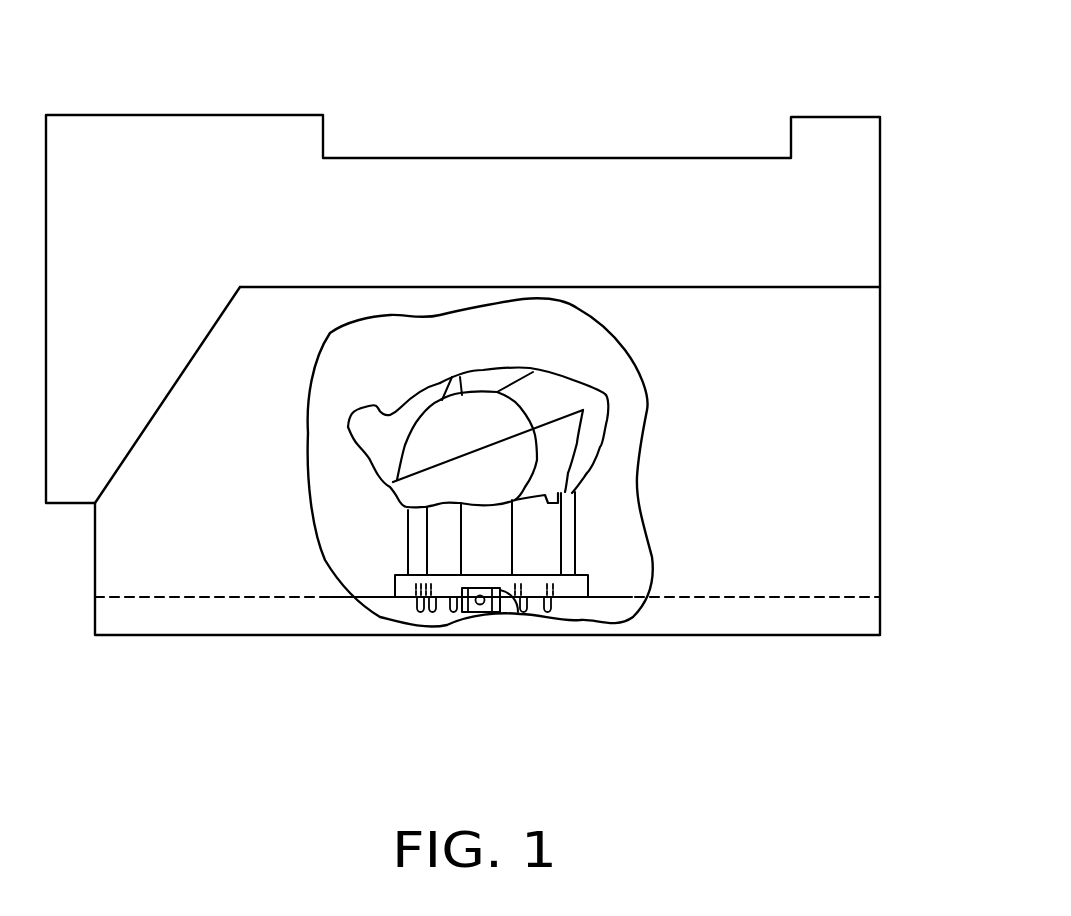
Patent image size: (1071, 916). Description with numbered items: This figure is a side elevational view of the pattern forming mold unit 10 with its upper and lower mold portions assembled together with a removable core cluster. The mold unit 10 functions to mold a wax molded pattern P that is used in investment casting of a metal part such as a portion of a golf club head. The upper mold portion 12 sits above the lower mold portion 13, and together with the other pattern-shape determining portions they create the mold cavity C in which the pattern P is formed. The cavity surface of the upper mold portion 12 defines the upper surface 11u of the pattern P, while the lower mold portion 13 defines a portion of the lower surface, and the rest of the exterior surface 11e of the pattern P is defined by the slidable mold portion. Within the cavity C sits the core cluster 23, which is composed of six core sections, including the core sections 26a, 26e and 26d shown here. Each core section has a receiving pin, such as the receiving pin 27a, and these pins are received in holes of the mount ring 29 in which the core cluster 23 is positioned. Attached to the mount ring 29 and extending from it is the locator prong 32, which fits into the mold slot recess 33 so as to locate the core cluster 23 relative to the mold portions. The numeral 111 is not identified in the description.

The pattern forming mold unit 10 is at (612, 133).
The upper mold portion 12 is at (148, 188).
The lower mold portion 13 is at (851, 563).
The mold cavity C is at (368, 388).
The wax molded pattern P is at (545, 366).
The exterior surface 11e is at (498, 366).
The upper surface 11u is at (490, 380).
The lamp bulb 111 is at (545, 366).
The core cluster 23 is at (466, 560).
The core section 26a is at (413, 521).
The core section 26e is at (441, 527).
The core section 26d is at (485, 548).
The receiving pin 27a is at (415, 602).
The mount ring 29 is at (575, 588).
The locator prong 32 is at (460, 612).
The mold slot recess 33 is at (518, 612).